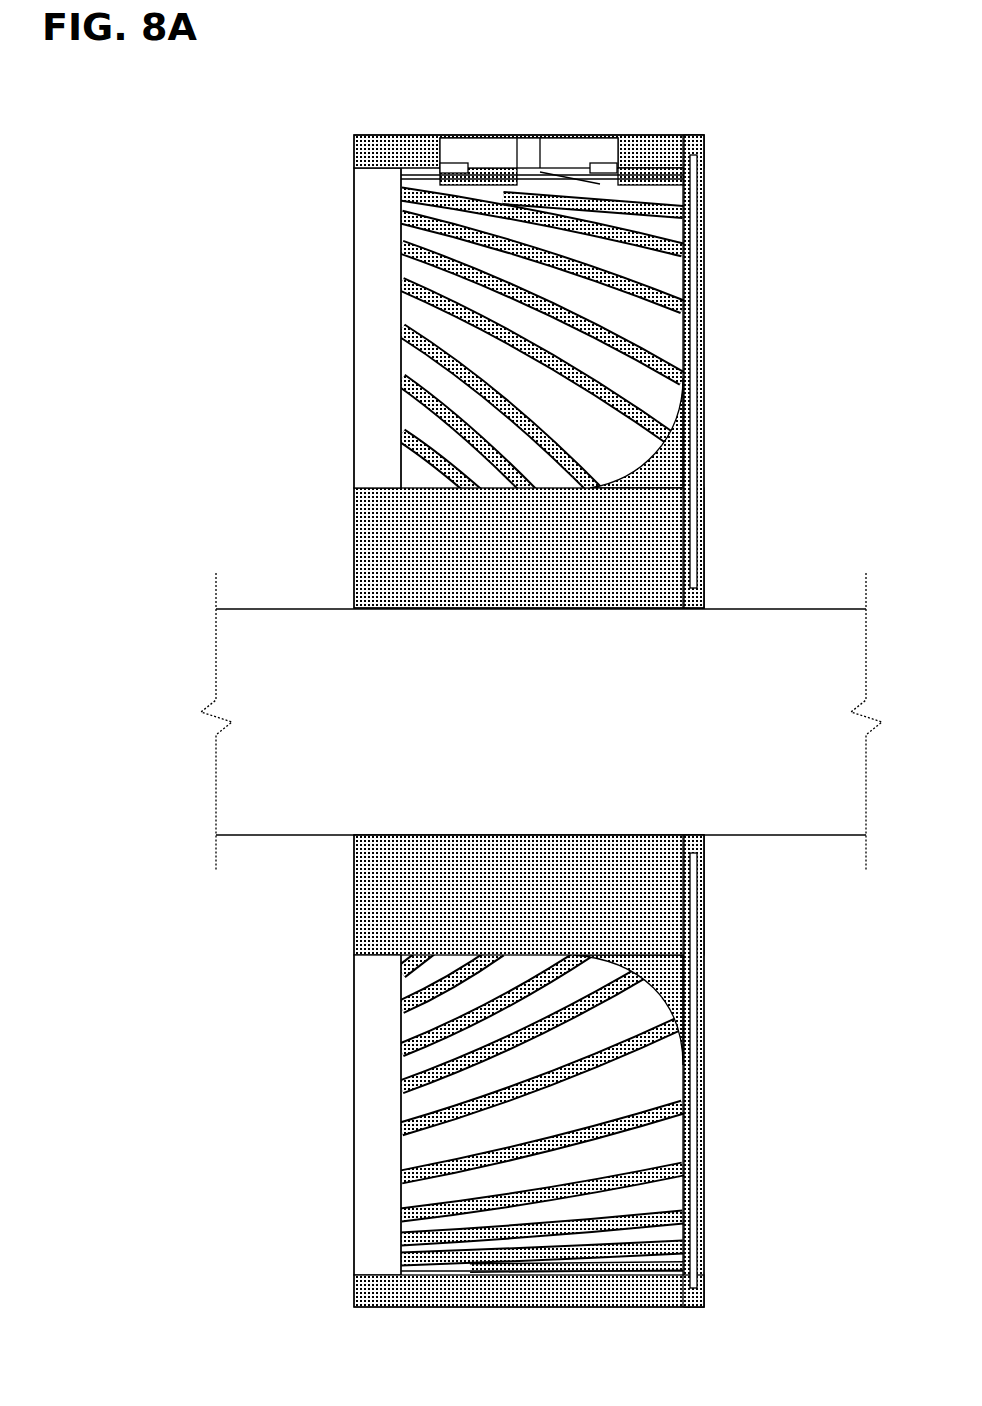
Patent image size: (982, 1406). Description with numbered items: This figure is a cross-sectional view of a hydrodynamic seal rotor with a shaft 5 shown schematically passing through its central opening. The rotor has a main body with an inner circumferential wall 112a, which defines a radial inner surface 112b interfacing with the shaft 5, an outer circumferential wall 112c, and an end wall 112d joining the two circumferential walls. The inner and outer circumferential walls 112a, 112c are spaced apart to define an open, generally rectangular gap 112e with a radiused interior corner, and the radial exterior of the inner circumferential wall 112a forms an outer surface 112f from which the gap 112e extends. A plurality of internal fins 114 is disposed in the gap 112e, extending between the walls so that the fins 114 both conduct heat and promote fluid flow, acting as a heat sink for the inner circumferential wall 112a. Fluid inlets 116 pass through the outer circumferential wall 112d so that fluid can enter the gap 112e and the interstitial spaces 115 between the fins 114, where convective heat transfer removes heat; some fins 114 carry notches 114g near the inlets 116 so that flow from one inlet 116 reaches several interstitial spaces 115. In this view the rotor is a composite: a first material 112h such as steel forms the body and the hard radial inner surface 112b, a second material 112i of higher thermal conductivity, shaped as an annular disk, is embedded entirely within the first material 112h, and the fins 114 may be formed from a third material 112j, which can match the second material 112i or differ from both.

The shaft 5 is at (537, 733).
The inner circumferential wall 112a is at (512, 563).
The radial inner surface 112b is at (415, 609).
The outer circumferential wall 112c is at (648, 142).
The end wall 112d is at (705, 333).
The gap 112e is at (630, 1083).
The outer surface 112f is at (490, 493).
The first material 112h is at (705, 598).
The second material 112i is at (694, 396).
The third material 112j is at (440, 346).
The internal fins 114 is at (670, 176).
The notches 114g is at (520, 183).
The interstitial spaces 115 is at (676, 194).
The fluid inlets 116 is at (568, 143).